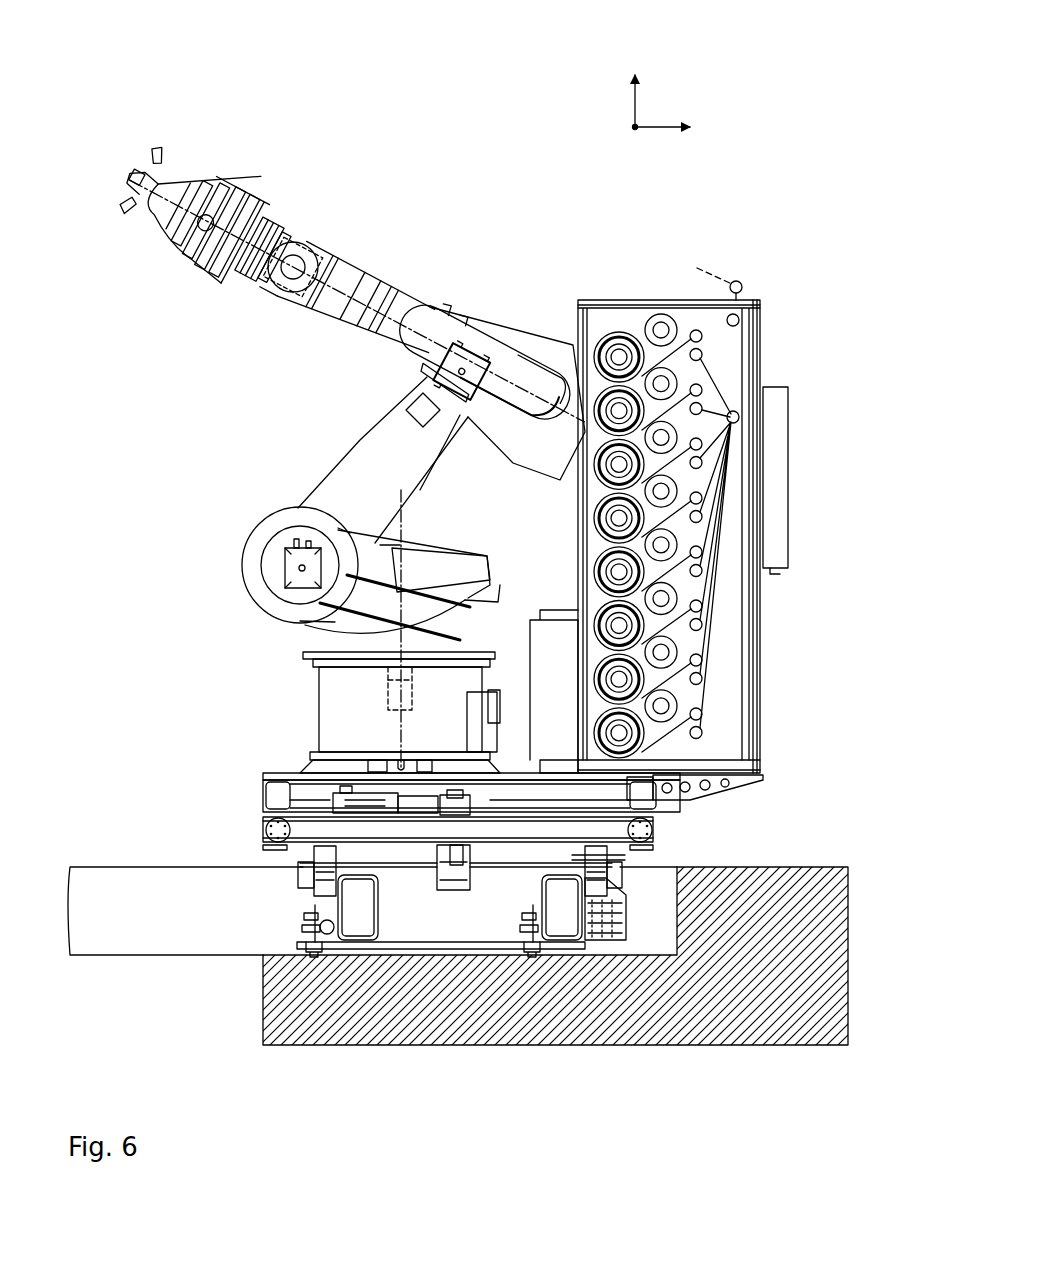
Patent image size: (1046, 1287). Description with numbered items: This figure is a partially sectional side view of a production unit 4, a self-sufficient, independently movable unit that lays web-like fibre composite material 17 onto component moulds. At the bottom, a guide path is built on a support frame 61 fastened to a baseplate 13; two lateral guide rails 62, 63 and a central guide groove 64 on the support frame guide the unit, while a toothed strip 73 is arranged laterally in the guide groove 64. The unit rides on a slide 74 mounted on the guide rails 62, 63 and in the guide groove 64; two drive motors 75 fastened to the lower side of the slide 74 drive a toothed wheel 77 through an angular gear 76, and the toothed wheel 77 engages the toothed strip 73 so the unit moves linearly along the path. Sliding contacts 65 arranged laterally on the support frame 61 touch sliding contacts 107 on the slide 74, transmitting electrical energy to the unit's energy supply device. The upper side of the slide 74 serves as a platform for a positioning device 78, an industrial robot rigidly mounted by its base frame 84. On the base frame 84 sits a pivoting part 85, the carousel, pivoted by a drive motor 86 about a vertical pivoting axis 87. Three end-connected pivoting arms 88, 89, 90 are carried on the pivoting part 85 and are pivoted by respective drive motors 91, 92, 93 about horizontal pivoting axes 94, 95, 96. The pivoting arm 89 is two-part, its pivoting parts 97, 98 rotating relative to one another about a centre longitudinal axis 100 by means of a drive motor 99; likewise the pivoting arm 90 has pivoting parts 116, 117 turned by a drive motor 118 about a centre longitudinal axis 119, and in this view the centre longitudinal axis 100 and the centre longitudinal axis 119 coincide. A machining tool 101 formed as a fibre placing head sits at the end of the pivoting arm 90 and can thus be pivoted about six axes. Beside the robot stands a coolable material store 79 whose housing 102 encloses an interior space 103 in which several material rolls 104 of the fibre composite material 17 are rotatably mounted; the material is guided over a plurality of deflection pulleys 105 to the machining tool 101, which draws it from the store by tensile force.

The production unit 4 is at (527, 130).
The baseplate 13 is at (697, 1040).
The fibre composite material 17 is at (717, 276).
The support frame 61 is at (340, 918).
The guide rail 62 is at (290, 857).
The guide rail 63 is at (605, 858).
The guide groove 64 is at (455, 864).
The sliding contacts 65 is at (592, 922).
The toothed strip 73 is at (463, 870).
The slide 74 is at (312, 790).
The drive motors 75 is at (345, 806).
The angular gear 76 is at (447, 822).
The toothed wheel 77 is at (453, 815).
The positioning device 78 is at (215, 163).
The material store 79 is at (640, 296).
The base frame 84 is at (332, 722).
The pivoting part 85 is at (345, 645).
The drive motor 86 is at (398, 697).
The pivoting axis 87 is at (385, 685).
The pivoting arm 88 is at (330, 480).
The pivoting arm 89 is at (398, 296).
The pivoting arm 90 is at (268, 218).
The drive motor 91 is at (288, 560).
The drive motor 92 is at (468, 358).
The drive motor 93 is at (302, 246).
The pivoting axis 94 is at (300, 568).
The pivoting axis 95 is at (428, 382).
The pivoting axis 96 is at (290, 279).
The pivoting part 97 is at (432, 318).
The pivoting part 98 is at (335, 303).
The drive motor 99 is at (583, 423).
The centre longitudinal axis 100 is at (318, 258).
The machining tool 101 is at (175, 230).
The housing 102 is at (758, 693).
The interior space 103 is at (735, 645).
The material rolls 104 is at (620, 745).
The deflection pulleys 105 is at (740, 287).
The sliding contacts 107 is at (611, 902).
The pivoting part 116 is at (255, 272).
The pivoting part 117 is at (215, 282).
The drive motor 118 is at (266, 226).
The centre longitudinal axis 119 is at (205, 188).